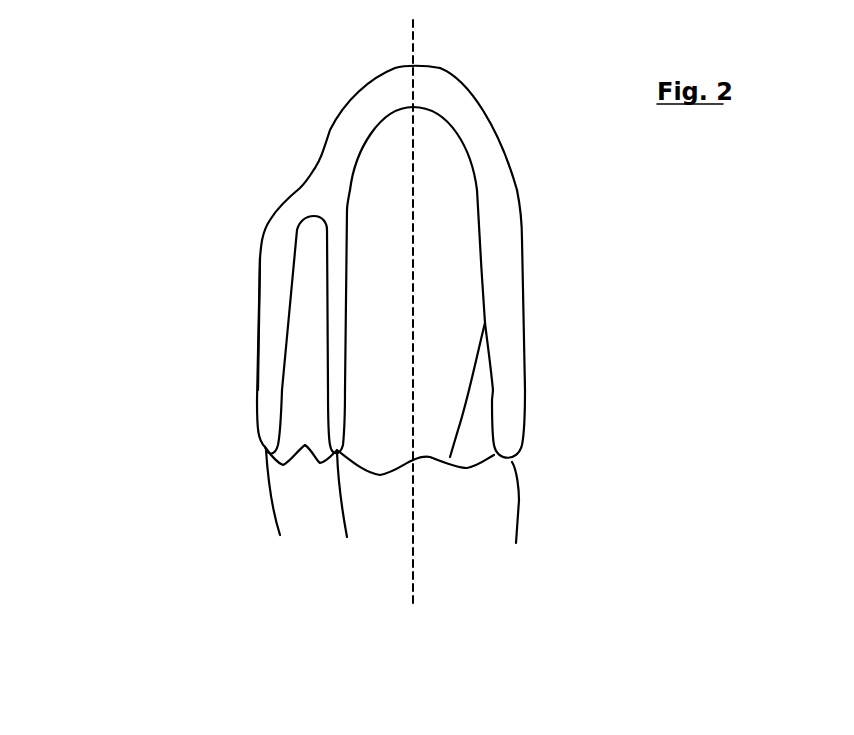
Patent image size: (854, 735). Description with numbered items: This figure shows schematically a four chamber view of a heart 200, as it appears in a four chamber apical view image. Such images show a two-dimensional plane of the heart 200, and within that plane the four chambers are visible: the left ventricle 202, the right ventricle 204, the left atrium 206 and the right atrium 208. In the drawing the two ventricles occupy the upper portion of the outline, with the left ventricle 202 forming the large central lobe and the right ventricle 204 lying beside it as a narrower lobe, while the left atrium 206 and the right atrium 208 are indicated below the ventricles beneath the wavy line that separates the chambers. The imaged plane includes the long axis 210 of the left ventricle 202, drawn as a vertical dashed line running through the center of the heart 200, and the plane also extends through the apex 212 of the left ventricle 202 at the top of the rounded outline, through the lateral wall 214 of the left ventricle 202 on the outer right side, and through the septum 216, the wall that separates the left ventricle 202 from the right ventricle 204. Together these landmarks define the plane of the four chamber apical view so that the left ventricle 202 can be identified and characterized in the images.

The heart 200 is at (380, 241).
The left ventricle 202 is at (425, 257).
The right ventricle 204 is at (300, 360).
The left atrium 206 is at (458, 502).
The right atrium 208 is at (307, 505).
The long axis 210 is at (420, 565).
The apex 212 is at (412, 100).
The lateral wall 214 is at (507, 290).
The septum 216 is at (330, 255).